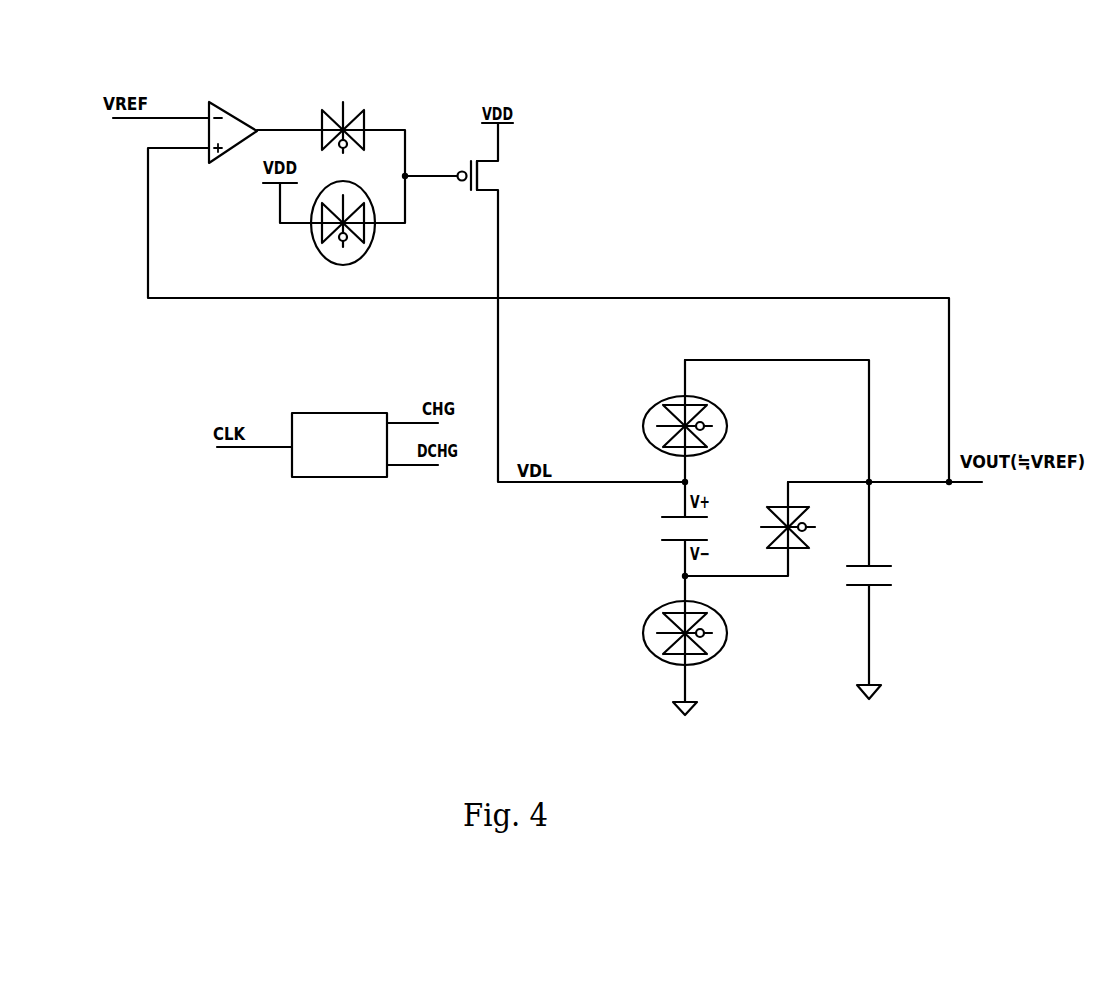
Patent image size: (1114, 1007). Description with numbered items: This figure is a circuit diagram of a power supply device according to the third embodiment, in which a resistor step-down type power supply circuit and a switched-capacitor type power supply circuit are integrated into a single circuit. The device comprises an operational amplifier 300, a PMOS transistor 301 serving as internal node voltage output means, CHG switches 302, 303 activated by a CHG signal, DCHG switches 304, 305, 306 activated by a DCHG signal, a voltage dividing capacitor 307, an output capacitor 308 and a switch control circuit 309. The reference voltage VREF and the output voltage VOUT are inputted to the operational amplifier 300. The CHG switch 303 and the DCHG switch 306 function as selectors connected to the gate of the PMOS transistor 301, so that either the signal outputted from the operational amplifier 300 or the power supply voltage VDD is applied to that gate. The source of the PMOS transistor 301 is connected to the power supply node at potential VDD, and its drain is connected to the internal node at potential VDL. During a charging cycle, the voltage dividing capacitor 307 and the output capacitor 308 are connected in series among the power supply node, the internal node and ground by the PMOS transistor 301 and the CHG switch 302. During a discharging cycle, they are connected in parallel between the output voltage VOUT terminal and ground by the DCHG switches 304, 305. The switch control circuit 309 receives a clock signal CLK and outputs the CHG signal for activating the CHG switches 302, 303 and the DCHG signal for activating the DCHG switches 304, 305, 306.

The operational amplifier 300 is at (213, 101).
The PMOS transistor 301 is at (497, 174).
The CHG switch 302 is at (770, 507).
The CHG switch 303 is at (343, 110).
The DCHG switch 304 is at (672, 397).
The DCHG switch 305 is at (648, 656).
The DCHG switch 306 is at (318, 252).
The voltage dividing capacitor 307 is at (656, 538).
The output capacitor 308 is at (893, 573).
The switch control circuit 309 is at (340, 478).